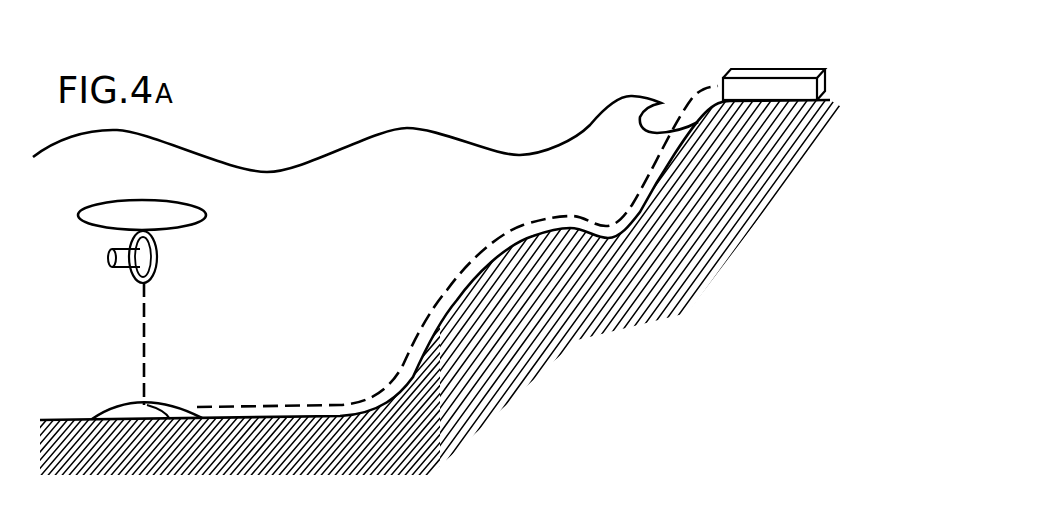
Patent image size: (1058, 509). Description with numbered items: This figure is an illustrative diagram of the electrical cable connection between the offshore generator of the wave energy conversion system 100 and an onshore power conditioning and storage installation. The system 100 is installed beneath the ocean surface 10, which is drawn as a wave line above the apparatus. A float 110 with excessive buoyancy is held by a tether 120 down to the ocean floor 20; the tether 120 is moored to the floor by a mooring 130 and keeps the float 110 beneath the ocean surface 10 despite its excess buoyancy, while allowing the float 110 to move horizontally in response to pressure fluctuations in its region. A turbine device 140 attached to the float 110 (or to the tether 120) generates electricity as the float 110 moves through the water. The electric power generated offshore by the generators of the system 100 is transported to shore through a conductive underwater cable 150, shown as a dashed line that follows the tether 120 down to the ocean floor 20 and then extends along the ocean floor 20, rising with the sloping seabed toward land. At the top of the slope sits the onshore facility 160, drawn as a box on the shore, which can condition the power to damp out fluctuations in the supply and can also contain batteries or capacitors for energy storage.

The ocean surface 10 is at (415, 126).
The ocean floor 20 is at (438, 280).
The wave energy conversion system 100 is at (158, 309).
The float 110 is at (200, 201).
The tether 120 is at (147, 393).
The mooring 130 is at (115, 403).
The turbine device 140 is at (160, 255).
The conductive underwater cable 150 is at (352, 395).
The onshore facility 160 is at (763, 70).